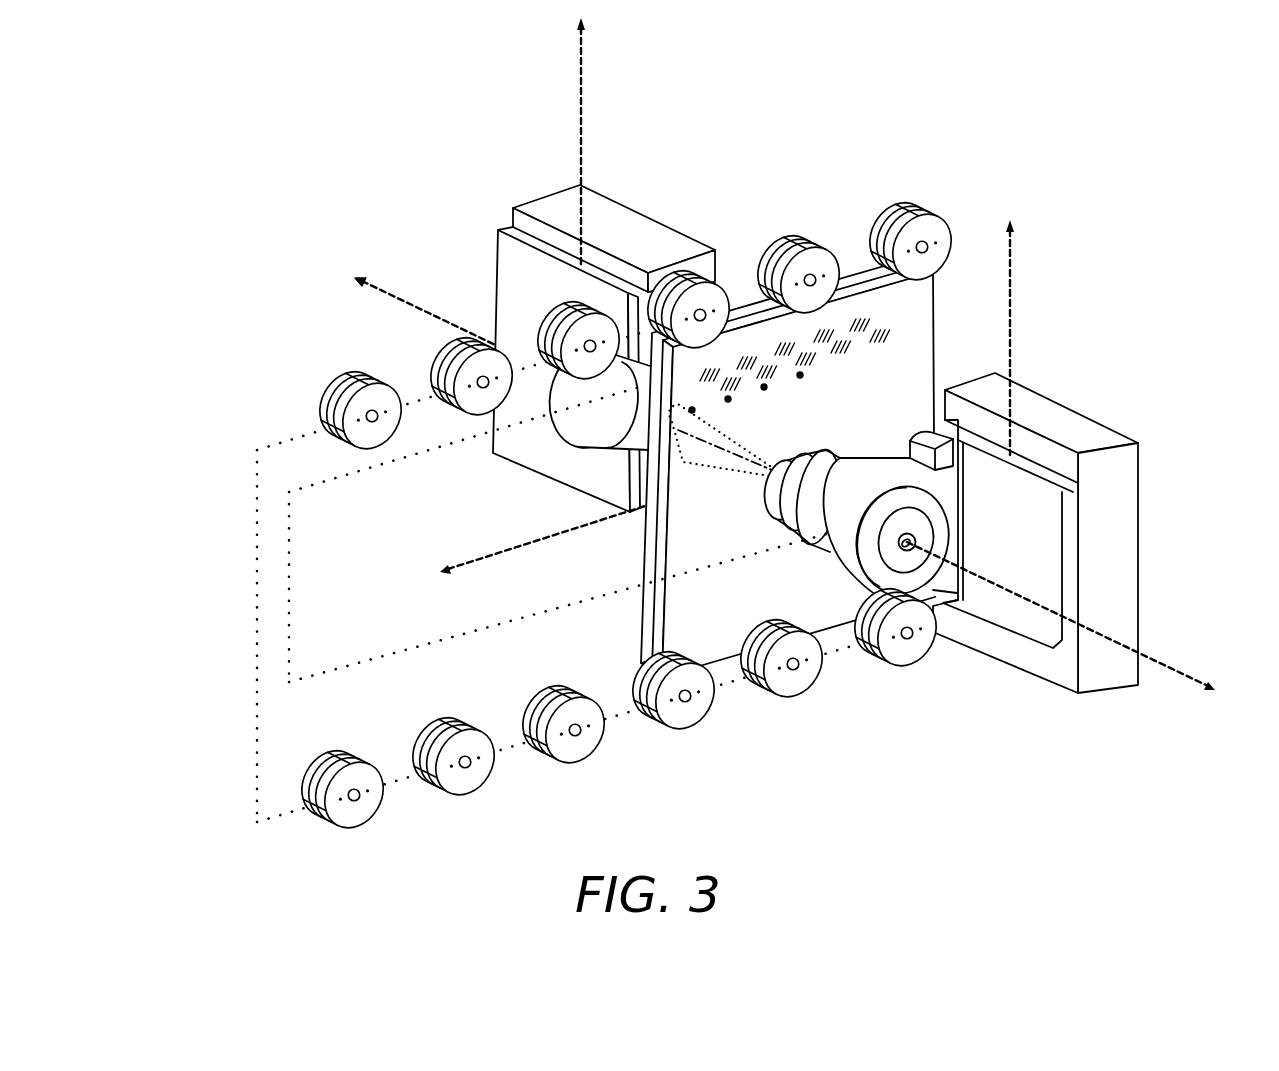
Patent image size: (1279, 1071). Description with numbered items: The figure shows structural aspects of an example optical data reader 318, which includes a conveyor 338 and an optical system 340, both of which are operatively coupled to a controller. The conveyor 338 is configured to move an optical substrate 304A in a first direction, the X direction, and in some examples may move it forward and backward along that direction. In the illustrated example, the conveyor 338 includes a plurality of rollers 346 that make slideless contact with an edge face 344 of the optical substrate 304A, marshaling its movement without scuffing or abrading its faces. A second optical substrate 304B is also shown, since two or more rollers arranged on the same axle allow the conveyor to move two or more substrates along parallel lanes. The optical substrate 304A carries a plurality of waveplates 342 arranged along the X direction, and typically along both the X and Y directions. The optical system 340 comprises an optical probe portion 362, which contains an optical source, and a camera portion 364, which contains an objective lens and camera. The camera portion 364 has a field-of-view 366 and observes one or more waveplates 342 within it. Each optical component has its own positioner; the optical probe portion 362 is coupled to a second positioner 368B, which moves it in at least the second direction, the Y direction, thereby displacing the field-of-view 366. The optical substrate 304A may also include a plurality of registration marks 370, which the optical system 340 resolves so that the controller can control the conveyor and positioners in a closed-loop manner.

The optical data reader 318 is at (703, 428).
The conveyor 338 is at (251, 609).
The optical system 340 is at (298, 588).
The waveplates 342 is at (841, 367).
The edge face 344 is at (723, 666).
The rollers 346 is at (382, 392).
The optical probe portion 362 is at (602, 447).
The camera portion 364 is at (797, 546).
The field-of-view 366 is at (727, 431).
The second positioner 368B is at (645, 217).
The registration marks 370 is at (801, 386).
The optical substrate 304A is at (789, 611).
The second optical substrate 304B is at (637, 644).